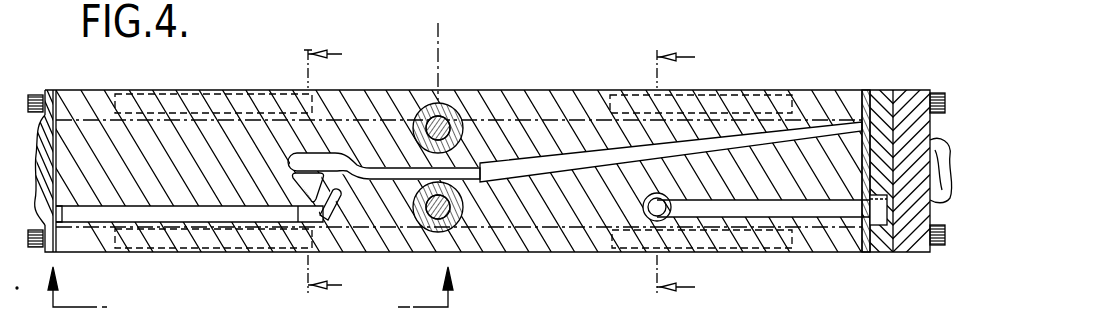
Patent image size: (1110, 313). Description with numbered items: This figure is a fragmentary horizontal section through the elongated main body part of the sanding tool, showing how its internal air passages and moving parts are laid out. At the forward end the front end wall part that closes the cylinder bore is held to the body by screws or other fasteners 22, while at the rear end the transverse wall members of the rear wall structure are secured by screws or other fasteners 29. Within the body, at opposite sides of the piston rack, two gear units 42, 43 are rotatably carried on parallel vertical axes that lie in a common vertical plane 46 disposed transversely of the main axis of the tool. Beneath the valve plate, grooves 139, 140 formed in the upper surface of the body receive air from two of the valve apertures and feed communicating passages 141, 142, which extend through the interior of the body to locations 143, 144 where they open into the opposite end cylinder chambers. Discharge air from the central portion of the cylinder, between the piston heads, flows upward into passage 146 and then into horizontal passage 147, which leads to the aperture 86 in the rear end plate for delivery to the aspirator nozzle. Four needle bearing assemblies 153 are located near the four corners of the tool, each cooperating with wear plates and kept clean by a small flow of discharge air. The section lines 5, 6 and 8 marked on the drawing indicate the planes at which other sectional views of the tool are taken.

The fasteners 22 is at (31, 92).
The fasteners 29 is at (940, 246).
The gear unit 42 is at (468, 207).
The gear unit 43 is at (447, 126).
The common vertical plane 46 is at (438, 52).
The aperture 86 is at (866, 214).
The groove 139 is at (378, 170).
The groove 140 is at (313, 213).
The passage 141 is at (716, 143).
The passage 142 is at (176, 215).
The location 143 is at (858, 126).
The location 144 is at (57, 211).
The passage 146 is at (653, 212).
The horizontal passage 147 is at (782, 215).
The needle bearing assemblies 153 is at (732, 251).
The section line 5- 5 is at (334, 171).
The section line 6- 6 is at (688, 172).
The section line 8- 8 is at (248, 290).